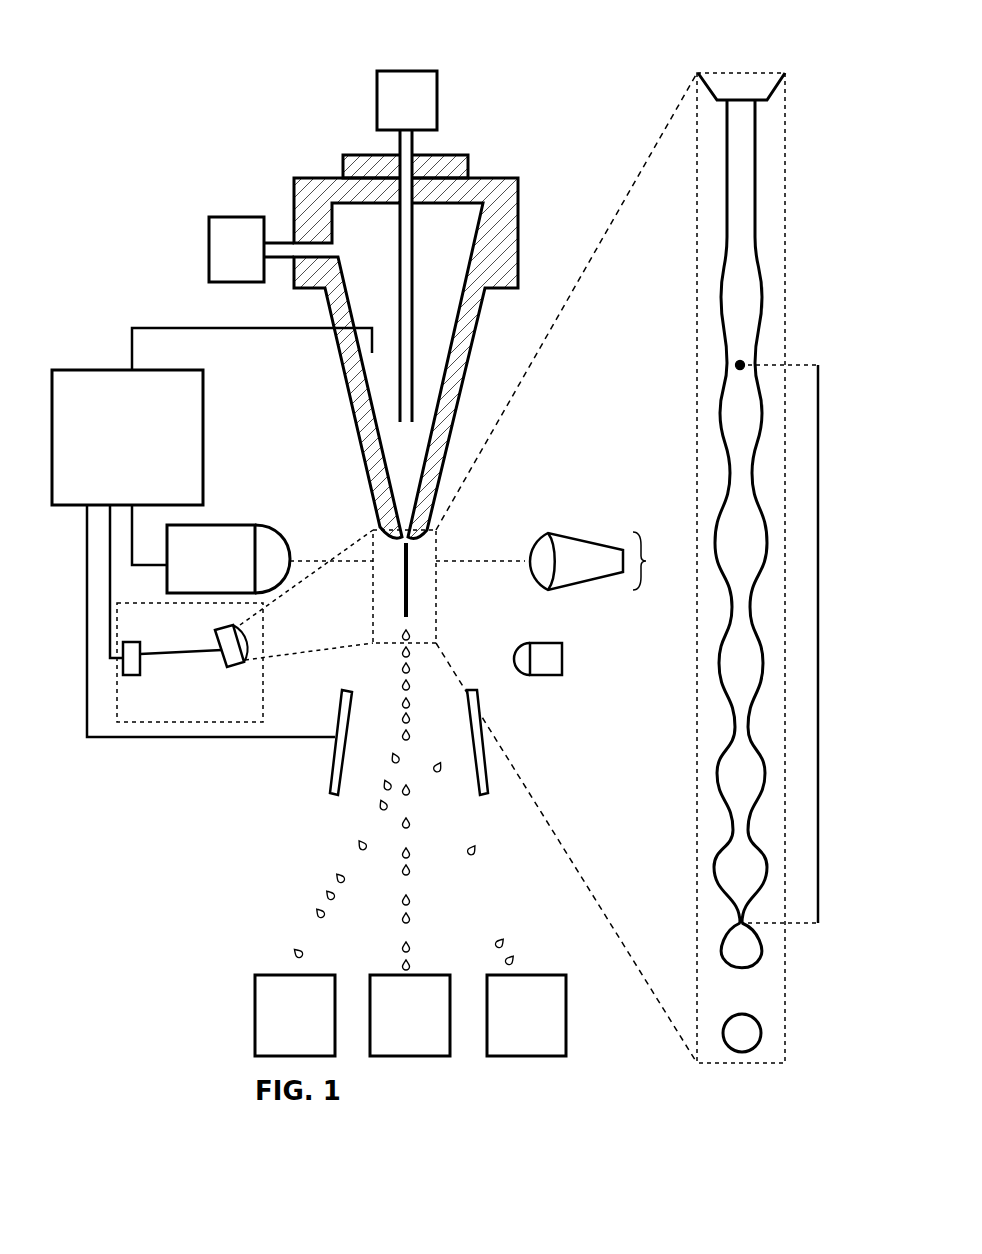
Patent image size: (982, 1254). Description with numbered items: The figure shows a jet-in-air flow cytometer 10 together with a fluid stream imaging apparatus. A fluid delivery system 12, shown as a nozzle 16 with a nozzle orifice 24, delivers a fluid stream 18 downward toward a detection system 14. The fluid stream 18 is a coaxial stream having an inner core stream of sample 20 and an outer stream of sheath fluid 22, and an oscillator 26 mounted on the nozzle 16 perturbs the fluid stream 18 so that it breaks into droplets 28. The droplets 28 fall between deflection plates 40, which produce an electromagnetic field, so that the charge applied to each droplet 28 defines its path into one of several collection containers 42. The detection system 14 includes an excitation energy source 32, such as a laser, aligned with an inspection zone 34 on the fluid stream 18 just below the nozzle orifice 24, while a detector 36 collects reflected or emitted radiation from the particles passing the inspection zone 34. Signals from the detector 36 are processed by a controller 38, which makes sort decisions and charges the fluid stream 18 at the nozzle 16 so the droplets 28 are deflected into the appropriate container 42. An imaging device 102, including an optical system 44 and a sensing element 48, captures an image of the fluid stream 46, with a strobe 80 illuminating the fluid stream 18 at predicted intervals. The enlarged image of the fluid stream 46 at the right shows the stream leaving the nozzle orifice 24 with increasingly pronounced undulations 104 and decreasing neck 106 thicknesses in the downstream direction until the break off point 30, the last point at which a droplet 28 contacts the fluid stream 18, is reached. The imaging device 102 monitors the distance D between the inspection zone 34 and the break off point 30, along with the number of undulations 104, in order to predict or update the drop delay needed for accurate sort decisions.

The flow cytometer 10 is at (183, 71).
The fluid delivery system 12 is at (288, 187).
The detection system 14 is at (654, 561).
The nozzle 16 is at (465, 332).
The fluid stream 18 is at (404, 599).
The sample 20 is at (407, 246).
The sheath fluid 22 is at (251, 249).
The nozzle orifice 24 is at (399, 540).
The oscillator 26 is at (452, 168).
The droplets 28 is at (409, 703).
The break off point 30 is at (738, 923).
The excitation energy source 32 is at (572, 549).
The inspection zone 34 is at (412, 561).
The detector 36 is at (225, 540).
The controller 38 is at (212, 532).
The deflection plates 40 is at (332, 763).
The collection containers 42 is at (410, 1015).
The optical system 44 is at (232, 655).
The image of the fluid stream 46 is at (774, 558).
The sensing element 48 is at (130, 663).
The strobe 80 is at (552, 660).
The imaging device 102 is at (190, 662).
The undulations 104 is at (712, 543).
The neck 106 is at (732, 727).
The distance D is at (818, 613).